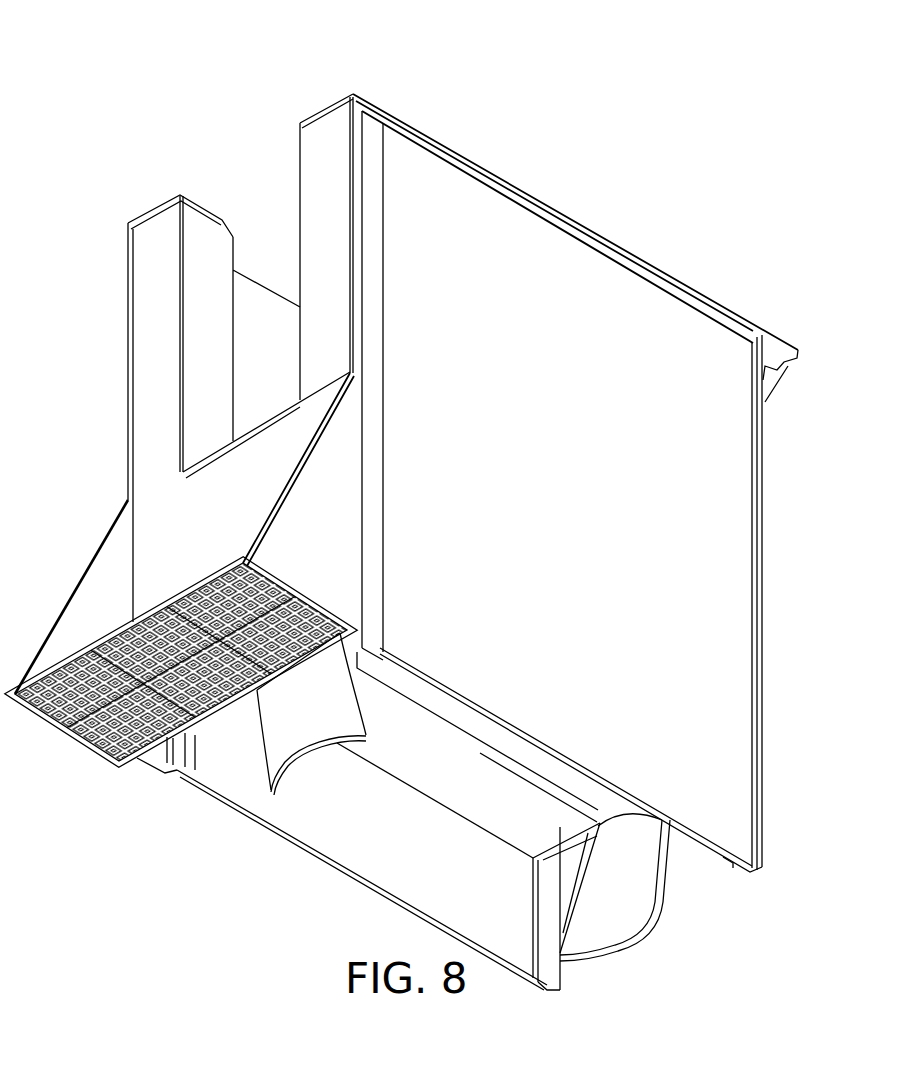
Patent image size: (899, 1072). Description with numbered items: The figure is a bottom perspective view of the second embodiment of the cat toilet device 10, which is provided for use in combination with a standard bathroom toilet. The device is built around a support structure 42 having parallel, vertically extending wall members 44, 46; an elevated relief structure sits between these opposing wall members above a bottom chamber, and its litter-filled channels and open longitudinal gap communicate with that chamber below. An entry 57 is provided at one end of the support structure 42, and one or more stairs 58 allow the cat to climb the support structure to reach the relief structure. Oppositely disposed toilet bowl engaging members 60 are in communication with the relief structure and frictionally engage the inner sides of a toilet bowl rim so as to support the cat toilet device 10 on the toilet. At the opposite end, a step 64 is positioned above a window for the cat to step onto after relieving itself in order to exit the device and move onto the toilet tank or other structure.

The cat toilet device 10 is at (84, 276).
The support structure 42 is at (785, 542).
The wall member 44 is at (264, 275).
The wall member 46 is at (473, 160).
The entry 57 is at (265, 370).
The stairs 58 is at (110, 634).
The toilet bowl engaging members 60 is at (300, 760).
The step 64 is at (787, 340).